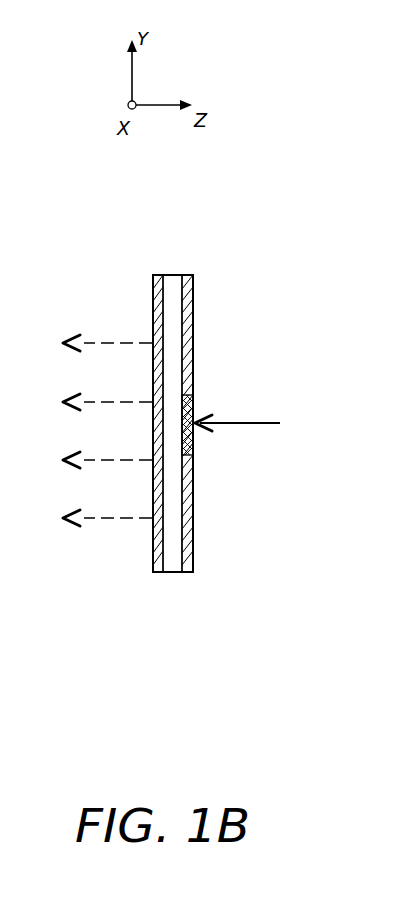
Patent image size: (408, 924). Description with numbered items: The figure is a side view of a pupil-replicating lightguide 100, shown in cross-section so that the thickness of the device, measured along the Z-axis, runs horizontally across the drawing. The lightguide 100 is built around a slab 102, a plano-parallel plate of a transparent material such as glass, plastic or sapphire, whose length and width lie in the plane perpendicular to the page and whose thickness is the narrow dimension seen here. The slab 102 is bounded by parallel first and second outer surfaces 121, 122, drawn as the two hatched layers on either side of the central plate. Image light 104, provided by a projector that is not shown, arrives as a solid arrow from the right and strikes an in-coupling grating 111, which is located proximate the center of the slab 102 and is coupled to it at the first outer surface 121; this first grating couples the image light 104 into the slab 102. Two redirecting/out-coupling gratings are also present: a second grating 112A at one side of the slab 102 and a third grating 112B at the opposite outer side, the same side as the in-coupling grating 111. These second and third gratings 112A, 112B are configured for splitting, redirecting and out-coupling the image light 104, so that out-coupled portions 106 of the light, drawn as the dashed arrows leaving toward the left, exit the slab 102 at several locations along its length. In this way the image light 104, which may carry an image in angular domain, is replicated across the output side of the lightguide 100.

The pupil-replicating lightguide 100 is at (123, 241).
The slab 102 is at (172, 562).
The image light 104 is at (237, 434).
The out-coupling portions of the light 106 is at (107, 442).
The in-coupling grating 111 is at (194, 404).
The second grating 112A is at (152, 562).
The third grating 112B is at (194, 530).
The first outer surface 121 is at (194, 296).
The second outer surface 122 is at (152, 294).